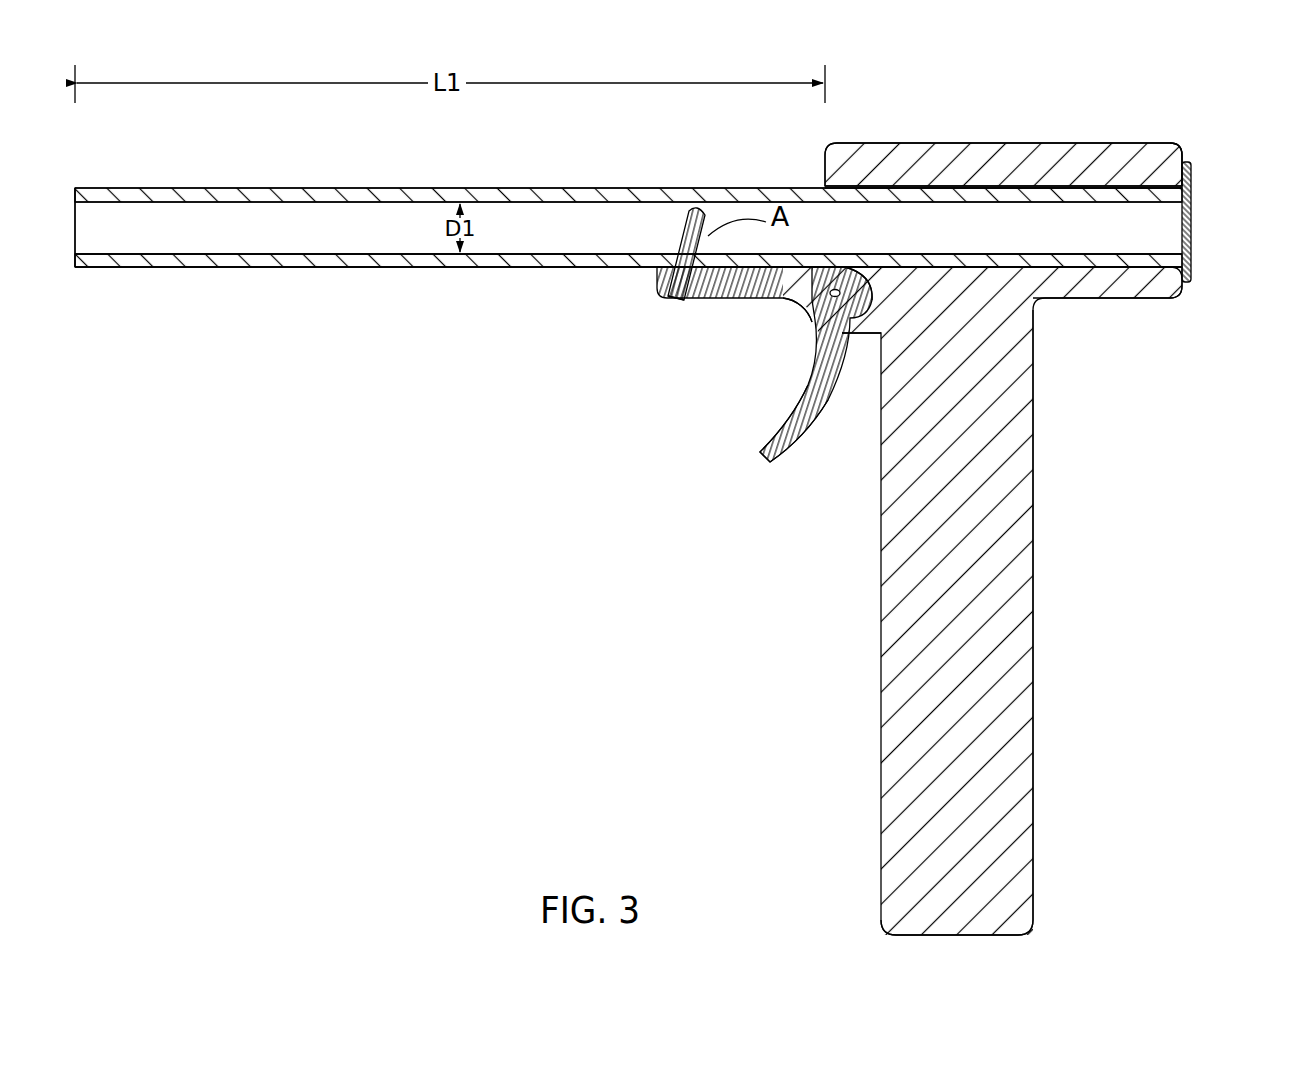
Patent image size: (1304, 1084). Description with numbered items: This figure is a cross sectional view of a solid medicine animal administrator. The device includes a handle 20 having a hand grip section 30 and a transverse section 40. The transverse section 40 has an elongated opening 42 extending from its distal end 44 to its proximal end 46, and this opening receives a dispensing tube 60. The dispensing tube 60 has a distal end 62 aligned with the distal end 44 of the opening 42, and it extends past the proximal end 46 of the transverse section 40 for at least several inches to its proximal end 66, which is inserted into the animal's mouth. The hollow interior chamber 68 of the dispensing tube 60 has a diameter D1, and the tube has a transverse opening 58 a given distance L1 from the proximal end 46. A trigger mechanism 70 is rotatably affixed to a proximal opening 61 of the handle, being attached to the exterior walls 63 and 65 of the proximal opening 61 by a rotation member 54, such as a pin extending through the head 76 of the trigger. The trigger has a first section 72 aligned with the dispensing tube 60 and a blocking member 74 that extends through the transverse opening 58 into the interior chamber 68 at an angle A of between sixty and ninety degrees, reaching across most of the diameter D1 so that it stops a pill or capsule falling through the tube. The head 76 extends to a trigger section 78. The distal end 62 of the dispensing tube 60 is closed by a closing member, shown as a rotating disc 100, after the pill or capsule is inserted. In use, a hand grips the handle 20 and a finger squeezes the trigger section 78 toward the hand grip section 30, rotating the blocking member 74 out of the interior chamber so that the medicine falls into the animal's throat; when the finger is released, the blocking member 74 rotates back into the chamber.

The handle 20 is at (1047, 600).
The hand grip section 30 is at (1034, 807).
The transverse section 40 is at (1056, 116).
The elongated opening 42 is at (1141, 190).
The distal end 44 is at (1182, 151).
The proximal end 46 is at (826, 150).
The rotation member 54 is at (812, 316).
The transverse opening 58 is at (700, 250).
The dispensing tube 60 is at (400, 188).
The proximal opening 61 is at (872, 298).
The distal end 62 is at (1158, 261).
The exterior wall 63 is at (871, 297).
The exterior wall 65 is at (858, 334).
The proximal end 66 is at (77, 187).
The interior chamber 68 is at (250, 247).
The trigger mechanism 70 is at (785, 311).
The first section 72 is at (688, 300).
The blocking member 74 is at (689, 234).
The head 76 is at (849, 268).
The trigger section 78 is at (764, 464).
The rotating disc 100 is at (1191, 204).